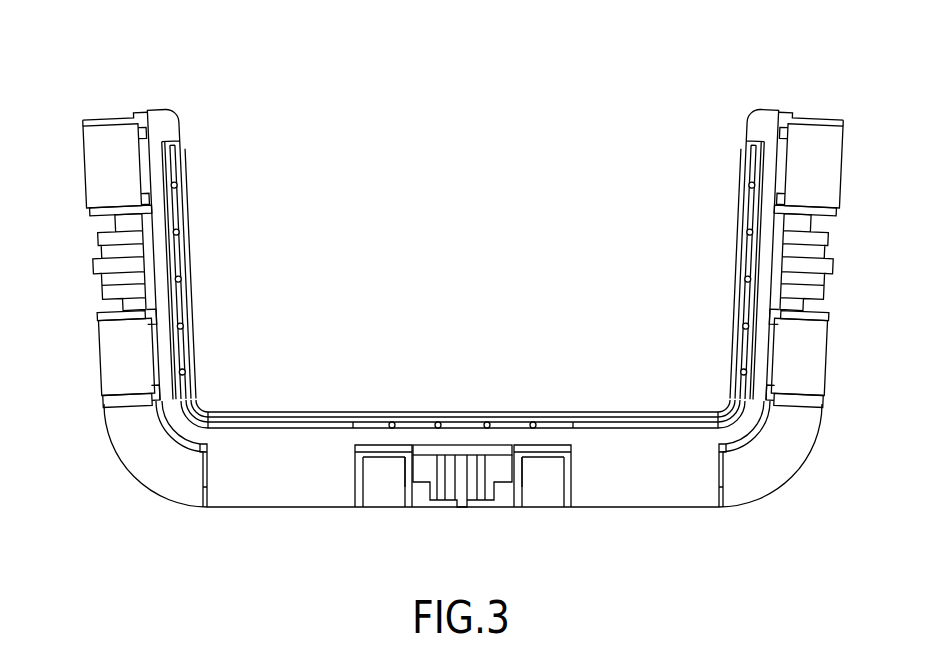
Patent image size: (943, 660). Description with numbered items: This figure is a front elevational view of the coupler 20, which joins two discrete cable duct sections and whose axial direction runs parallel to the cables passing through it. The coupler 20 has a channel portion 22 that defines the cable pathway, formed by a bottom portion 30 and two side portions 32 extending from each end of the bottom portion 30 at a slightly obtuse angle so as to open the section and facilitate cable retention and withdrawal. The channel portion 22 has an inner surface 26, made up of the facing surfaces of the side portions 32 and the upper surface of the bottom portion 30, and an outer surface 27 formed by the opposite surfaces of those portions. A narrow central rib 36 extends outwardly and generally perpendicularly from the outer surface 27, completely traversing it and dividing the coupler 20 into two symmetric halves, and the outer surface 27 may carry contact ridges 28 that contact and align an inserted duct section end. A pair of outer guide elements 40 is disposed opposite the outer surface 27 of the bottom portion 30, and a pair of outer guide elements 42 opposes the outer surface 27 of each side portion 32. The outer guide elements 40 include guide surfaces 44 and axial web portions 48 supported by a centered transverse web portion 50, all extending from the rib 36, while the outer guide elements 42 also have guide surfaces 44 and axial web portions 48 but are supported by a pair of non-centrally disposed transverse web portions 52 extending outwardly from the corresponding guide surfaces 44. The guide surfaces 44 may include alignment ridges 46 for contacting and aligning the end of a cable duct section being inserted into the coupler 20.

The coupler 20 is at (117, 490).
The channel portion 22 is at (238, 413).
The inner surface 26 is at (623, 412).
The outer surface 27 is at (598, 426).
The contact ridges 28 is at (437, 424).
The bottom portion 30 is at (300, 428).
The side portions 32 is at (182, 193).
The rib 36 is at (162, 122).
The outer guide elements 40 is at (537, 491).
The outer guide elements 42 is at (137, 172).
The guide surfaces 44 is at (760, 340).
The alignment ridges 46 is at (361, 445).
The axial web portions 48 is at (140, 312).
The centered transverse web portion 50 is at (662, 465).
The transverse web portions 52 is at (123, 349).